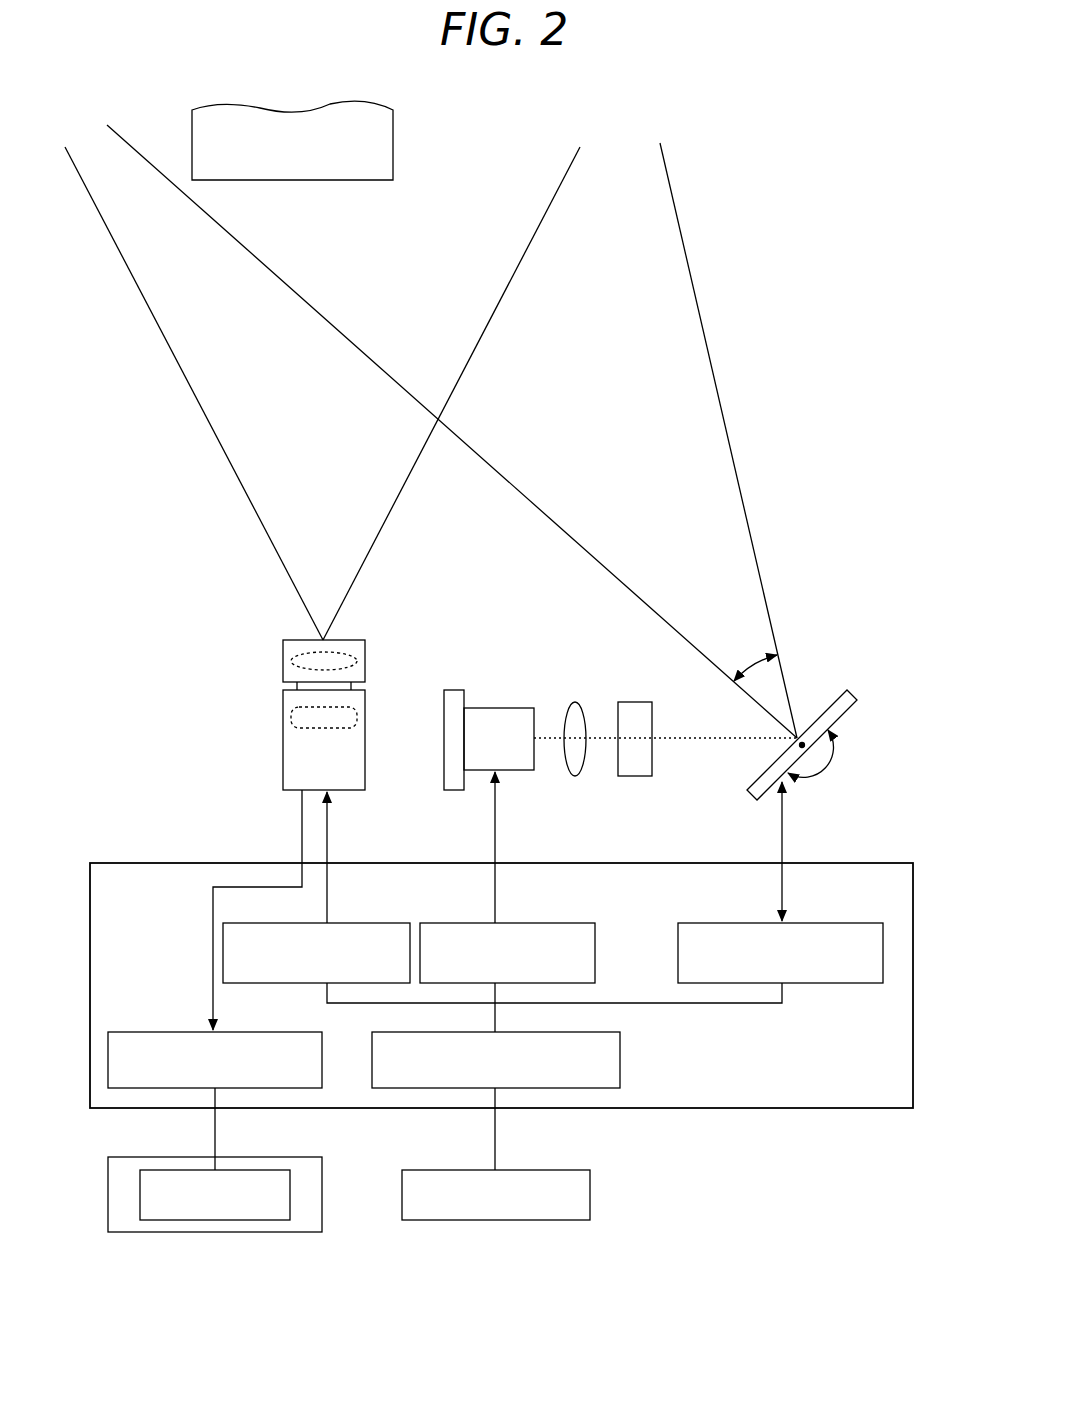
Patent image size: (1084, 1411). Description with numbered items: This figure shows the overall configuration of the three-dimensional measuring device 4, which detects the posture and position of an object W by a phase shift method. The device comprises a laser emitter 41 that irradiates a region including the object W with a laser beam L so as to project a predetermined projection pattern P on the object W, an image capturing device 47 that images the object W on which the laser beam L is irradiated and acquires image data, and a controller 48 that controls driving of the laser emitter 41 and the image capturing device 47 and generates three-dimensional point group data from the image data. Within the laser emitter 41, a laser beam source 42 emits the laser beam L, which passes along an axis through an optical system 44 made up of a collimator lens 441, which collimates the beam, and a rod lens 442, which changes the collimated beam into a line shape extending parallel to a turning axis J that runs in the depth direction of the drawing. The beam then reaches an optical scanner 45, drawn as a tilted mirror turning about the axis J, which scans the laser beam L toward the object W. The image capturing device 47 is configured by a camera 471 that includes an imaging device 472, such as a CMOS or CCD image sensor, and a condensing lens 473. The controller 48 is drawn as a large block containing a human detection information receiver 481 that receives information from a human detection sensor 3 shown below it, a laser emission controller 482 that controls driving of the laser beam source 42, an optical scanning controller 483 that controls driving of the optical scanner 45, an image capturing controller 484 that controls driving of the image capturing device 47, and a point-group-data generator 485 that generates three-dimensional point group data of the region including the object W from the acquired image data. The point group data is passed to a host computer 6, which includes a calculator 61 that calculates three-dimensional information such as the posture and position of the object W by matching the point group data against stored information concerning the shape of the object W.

The object W is at (393, 152).
The projection pattern P is at (284, 190).
The laser beam L is at (722, 400).
The three-dimensional measuring device 4 is at (852, 510).
The laser emitter 41 is at (692, 709).
The laser beam source 42 is at (491, 722).
The optical system 44 is at (613, 744).
The collimator lens 441 is at (574, 762).
The rod lens 442 is at (633, 757).
The optical scanner 45 is at (862, 724).
The turning axis J is at (808, 722).
The image capturing device 47 is at (275, 707).
The camera 471 is at (292, 772).
The imaging device 472 is at (297, 717).
The condensing lens 473 is at (282, 657).
The controller 48 is at (501, 980).
The human detection information receiver 481 is at (621, 1058).
The laser emission controller 482 is at (547, 921).
The optical scanning controller 483 is at (845, 921).
The image capturing controller 484 is at (381, 921).
The point-group-data generator 485 is at (158, 1030).
The human detection sensor 3 is at (552, 1169).
The host computer 6 is at (215, 1234).
The calculator 61 is at (271, 1222).